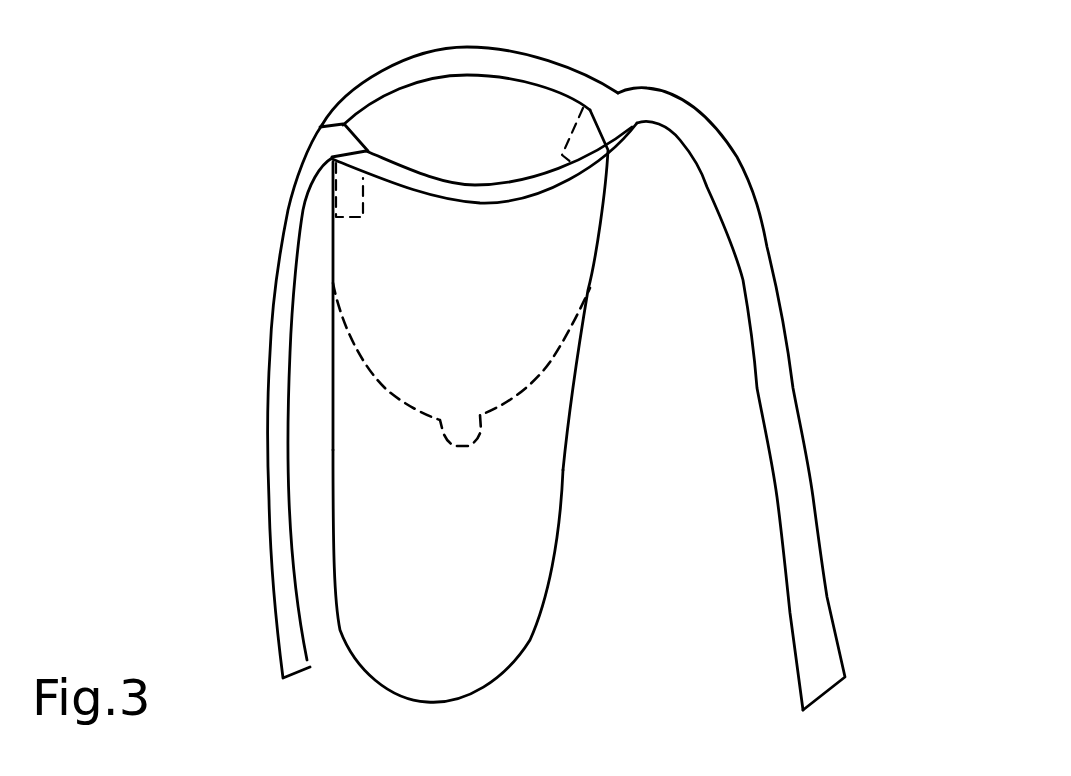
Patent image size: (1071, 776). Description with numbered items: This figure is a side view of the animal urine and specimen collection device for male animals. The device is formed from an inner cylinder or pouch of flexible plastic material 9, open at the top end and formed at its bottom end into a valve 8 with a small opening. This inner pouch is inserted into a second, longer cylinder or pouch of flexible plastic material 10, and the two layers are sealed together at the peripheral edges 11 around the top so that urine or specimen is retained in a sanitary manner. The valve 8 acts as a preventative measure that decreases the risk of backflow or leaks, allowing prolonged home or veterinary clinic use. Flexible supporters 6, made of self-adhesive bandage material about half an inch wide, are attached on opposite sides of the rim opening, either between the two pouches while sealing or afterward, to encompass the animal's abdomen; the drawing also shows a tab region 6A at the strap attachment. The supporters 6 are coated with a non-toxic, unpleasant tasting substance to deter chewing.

The peripheral edges 11 is at (525, 70).
The flexible supporters 6 is at (760, 307).
The strap end tab 6A is at (345, 192).
The cylinder or pouch of flexible plastic material 9 is at (503, 268).
The valve 8 is at (465, 443).
The longer cylinder or pouch of flexible plastic material 10 is at (483, 608).